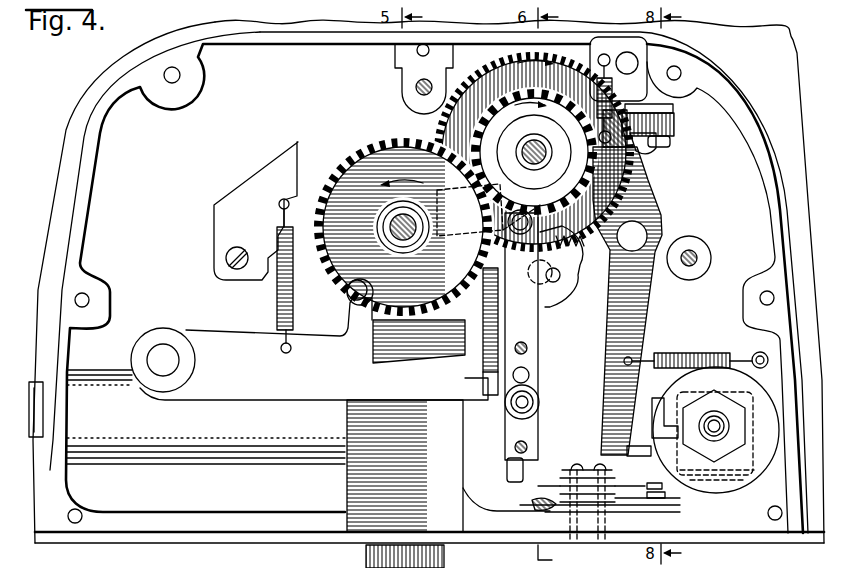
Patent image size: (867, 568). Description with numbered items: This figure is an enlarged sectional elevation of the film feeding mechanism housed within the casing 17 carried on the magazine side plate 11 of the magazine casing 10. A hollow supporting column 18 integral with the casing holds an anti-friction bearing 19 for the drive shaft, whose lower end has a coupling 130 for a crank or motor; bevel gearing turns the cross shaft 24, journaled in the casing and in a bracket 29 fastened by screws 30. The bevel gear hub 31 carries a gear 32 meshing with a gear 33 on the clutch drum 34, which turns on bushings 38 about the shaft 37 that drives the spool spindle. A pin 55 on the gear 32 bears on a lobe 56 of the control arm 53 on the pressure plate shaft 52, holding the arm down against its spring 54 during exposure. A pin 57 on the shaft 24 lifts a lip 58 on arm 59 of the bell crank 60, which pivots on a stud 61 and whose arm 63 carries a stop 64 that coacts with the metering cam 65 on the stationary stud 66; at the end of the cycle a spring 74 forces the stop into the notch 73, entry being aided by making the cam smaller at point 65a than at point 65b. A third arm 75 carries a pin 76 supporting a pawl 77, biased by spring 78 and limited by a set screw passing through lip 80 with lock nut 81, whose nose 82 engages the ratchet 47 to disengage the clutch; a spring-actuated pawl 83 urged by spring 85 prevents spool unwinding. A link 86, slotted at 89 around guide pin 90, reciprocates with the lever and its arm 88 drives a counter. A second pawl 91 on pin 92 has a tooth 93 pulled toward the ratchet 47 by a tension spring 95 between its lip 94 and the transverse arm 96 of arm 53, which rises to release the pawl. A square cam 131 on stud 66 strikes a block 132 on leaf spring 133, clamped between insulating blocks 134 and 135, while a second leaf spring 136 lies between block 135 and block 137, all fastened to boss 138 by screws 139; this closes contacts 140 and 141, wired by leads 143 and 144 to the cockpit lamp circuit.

The magazine casing 10 is at (800, 50).
The magazine side plate 11 is at (86, 104).
The casing 17 is at (218, 44).
The hollow supporting column 18 is at (366, 474).
The anti-friction bearing 19 is at (630, 128).
The cross shaft 24 is at (404, 240).
The bracket 29 is at (252, 186).
The screws 30 is at (420, 86).
The hub 31 is at (432, 270).
The gear 32 is at (348, 172).
The gear 33 is at (500, 110).
The drum 34 is at (510, 131).
The shaft 37 is at (542, 163).
The bushing 38 is at (552, 150).
The ratchet 47 is at (476, 86).
The shaft 52 is at (163, 345).
The control arm 53 is at (230, 388).
The spring 54 is at (276, 294).
The pin 55 is at (358, 283).
The lobe 56 is at (362, 324).
The pin 57 is at (420, 235).
The lip 58 is at (470, 201).
The arm 59 is at (499, 227).
The bell crank 60 is at (662, 214).
The stud 61 is at (642, 233).
The arm 63 is at (630, 314).
The stop 64 is at (638, 455).
The metering cam 65 is at (680, 381).
The cam point 65a is at (670, 403).
The cam point 65b is at (671, 453).
The stationary shaft 66 is at (715, 422).
The notch 73 is at (658, 425).
The spring 74 is at (668, 355).
The third arm 75 is at (647, 183).
The pin 76 is at (634, 70).
The pawl 77 is at (663, 57).
The spring 78 is at (597, 100).
The lip 80 is at (670, 110).
The lock nut 81 is at (674, 122).
The nose 82 is at (598, 54).
The spring-actuated pawl 83 is at (657, 160).
The spring 85 is at (668, 141).
The link 86 is at (530, 329).
The arm 88 is at (510, 470).
The slot 89 is at (531, 379).
The guide pin 90 is at (530, 403).
The clutch disengaging pawl 91 is at (561, 288).
The pin 92 is at (552, 232).
The tooth 93 is at (598, 230).
The lip 94 is at (483, 270).
The tension spring 95 is at (487, 333).
The transverse arm 96 is at (491, 395).
The coupling 130 is at (368, 553).
The square cam 131 is at (726, 433).
The block 132 is at (729, 455).
The leaf spring 133 is at (623, 486).
The insulating block 134 is at (576, 468).
The insulating block 135 is at (562, 488).
The leaf spring 136 is at (636, 506).
The insulating block 137 is at (545, 512).
The boss 138 is at (558, 506).
The screws 139 is at (600, 462).
The contact 140 is at (656, 490).
The contact 141 is at (675, 506).
The lead 143 is at (545, 468).
The lead 144 is at (535, 502).